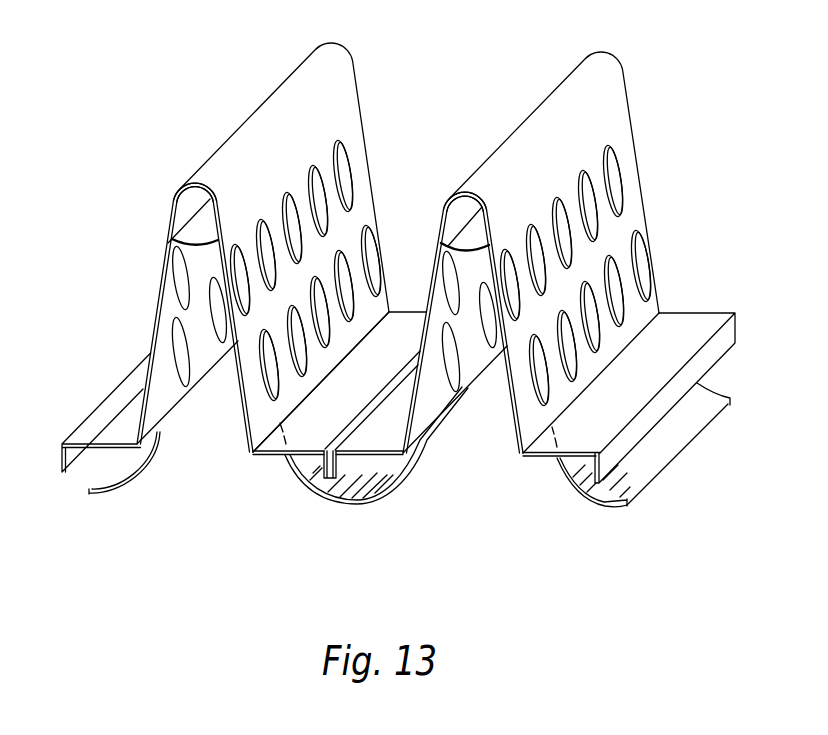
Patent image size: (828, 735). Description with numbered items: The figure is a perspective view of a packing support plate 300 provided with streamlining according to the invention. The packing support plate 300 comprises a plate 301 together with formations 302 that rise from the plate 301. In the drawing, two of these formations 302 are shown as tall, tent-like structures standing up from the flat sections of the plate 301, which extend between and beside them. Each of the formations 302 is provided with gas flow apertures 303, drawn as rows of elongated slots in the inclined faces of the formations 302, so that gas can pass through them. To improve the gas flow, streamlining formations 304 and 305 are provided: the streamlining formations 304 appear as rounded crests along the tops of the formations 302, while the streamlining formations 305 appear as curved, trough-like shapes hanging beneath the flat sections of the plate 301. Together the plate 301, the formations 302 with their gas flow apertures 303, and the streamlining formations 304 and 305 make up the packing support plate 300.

The packing support plate 300 is at (392, 296).
The plate 301 is at (63, 443).
The formations 302 is at (357, 55).
The gas flow apertures 303 is at (343, 170).
The streamlining formations 304 is at (194, 242).
The streamlining formations 305 is at (95, 495).